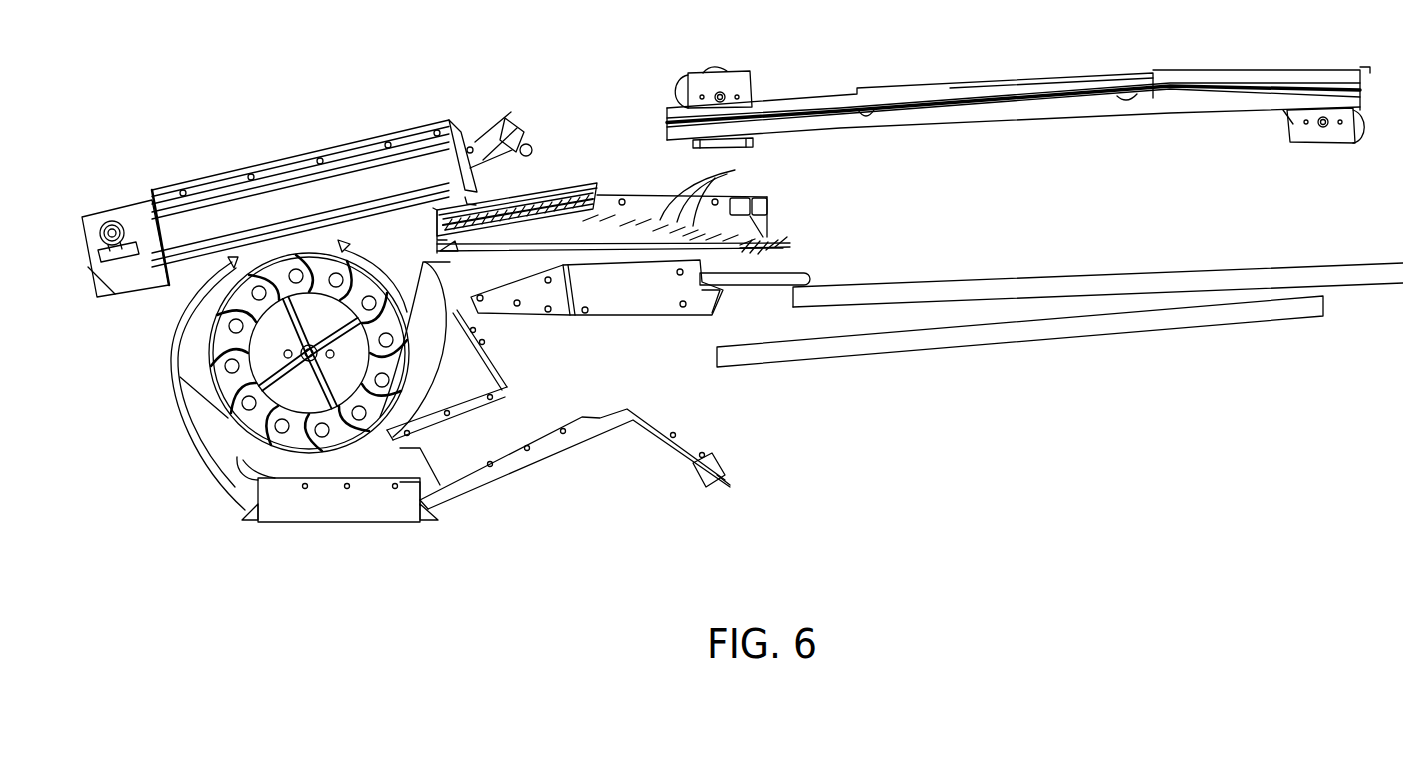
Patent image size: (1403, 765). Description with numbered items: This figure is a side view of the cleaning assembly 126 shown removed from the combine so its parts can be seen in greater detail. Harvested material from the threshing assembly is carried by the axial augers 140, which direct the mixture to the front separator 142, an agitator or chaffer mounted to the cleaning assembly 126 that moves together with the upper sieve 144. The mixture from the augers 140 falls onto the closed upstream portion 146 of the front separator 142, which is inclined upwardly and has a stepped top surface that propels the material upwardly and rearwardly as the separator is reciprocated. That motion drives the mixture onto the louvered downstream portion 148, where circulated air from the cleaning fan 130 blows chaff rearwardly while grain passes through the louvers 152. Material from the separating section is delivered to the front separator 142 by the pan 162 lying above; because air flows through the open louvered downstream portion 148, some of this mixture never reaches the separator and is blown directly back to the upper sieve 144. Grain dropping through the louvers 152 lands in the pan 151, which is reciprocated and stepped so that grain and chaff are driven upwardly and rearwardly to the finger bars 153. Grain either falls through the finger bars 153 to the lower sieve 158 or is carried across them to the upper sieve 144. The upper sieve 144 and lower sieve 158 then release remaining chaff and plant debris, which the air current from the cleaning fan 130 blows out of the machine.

The cleaning assembly 126 is at (847, 61).
The cleaning fan 130 is at (225, 410).
The axial augers 140 is at (297, 204).
The front separator 142 is at (577, 175).
The upper sieve 144 is at (1047, 283).
The closed upstream portion 146 is at (520, 240).
The louvered downstream portion 148 is at (640, 196).
The pan 151 is at (648, 303).
The louvers 152 is at (733, 170).
The finger bars 153 is at (748, 288).
The lower sieve 158 is at (1076, 330).
The pan 162 is at (1008, 117).